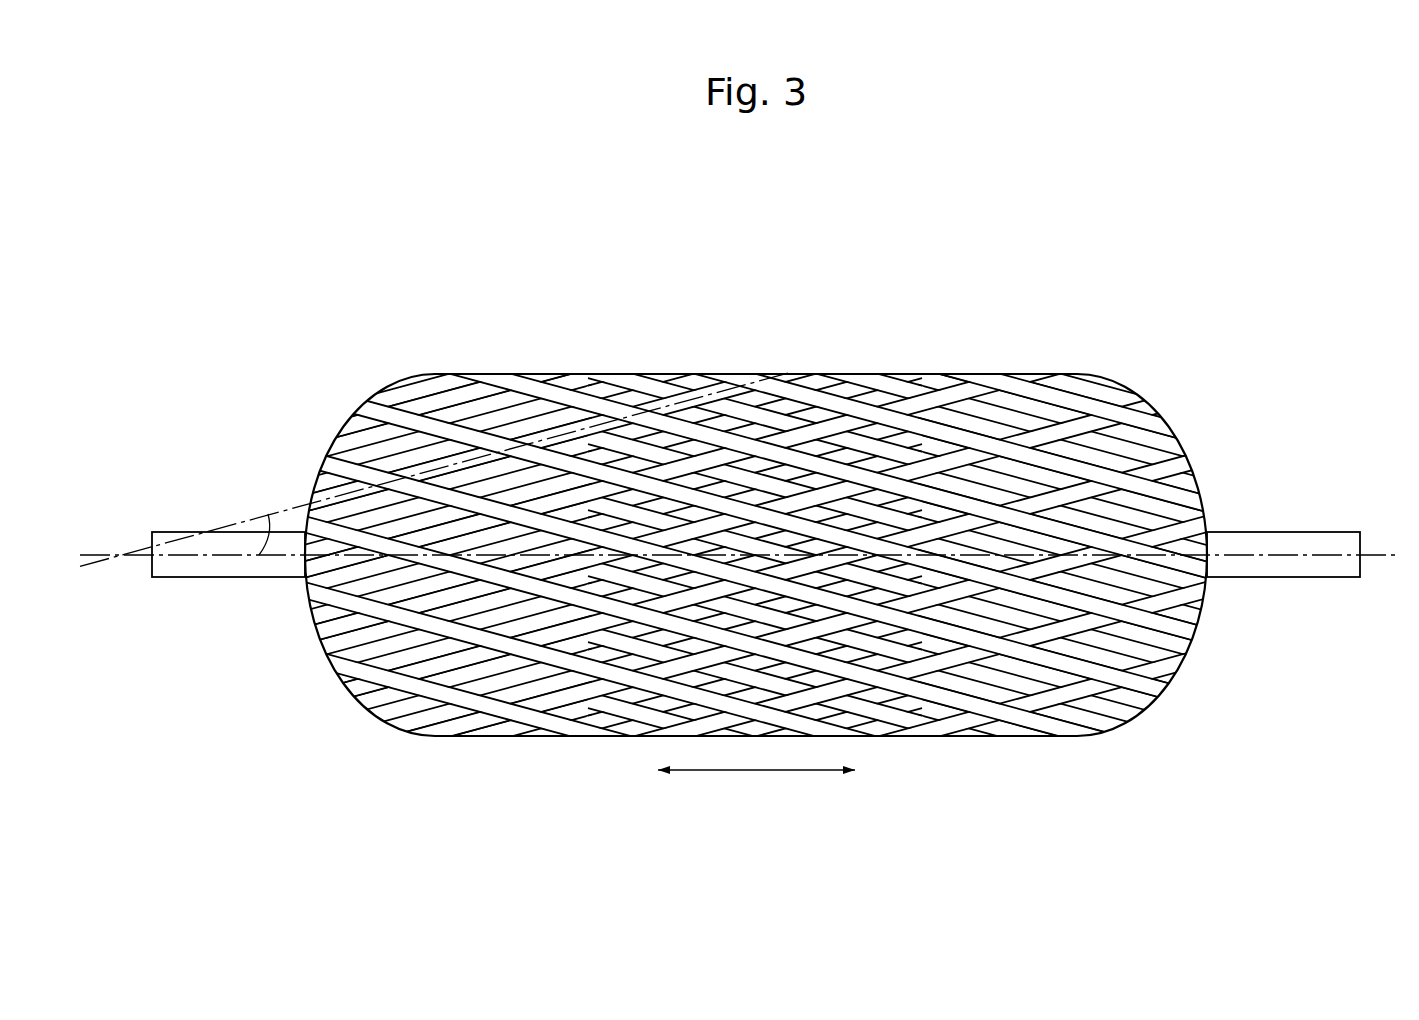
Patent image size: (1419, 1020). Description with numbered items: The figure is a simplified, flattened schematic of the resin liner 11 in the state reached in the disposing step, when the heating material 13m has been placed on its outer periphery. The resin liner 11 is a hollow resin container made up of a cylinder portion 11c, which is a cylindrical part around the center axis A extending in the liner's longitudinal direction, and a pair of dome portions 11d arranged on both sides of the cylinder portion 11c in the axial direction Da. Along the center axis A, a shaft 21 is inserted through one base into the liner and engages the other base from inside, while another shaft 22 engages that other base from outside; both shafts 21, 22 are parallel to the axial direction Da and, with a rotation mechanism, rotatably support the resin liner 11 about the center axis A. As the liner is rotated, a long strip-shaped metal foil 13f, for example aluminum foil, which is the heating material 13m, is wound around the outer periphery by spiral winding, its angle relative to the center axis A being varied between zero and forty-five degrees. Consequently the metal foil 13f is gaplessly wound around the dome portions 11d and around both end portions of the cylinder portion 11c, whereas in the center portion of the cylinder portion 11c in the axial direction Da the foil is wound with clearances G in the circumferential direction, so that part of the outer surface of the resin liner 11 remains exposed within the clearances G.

The resin liner 11 is at (756, 546).
The cylinder portion 11c is at (756, 555).
The dome portions 11d is at (302, 447).
The heating material 13m is at (756, 546).
The metal foil 13f is at (1143, 364).
The clearances G is at (786, 541).
The shaft 21 is at (198, 580).
The shaft 22 is at (1271, 580).
The center axis A is at (749, 556).
The axial direction Da is at (756, 785).